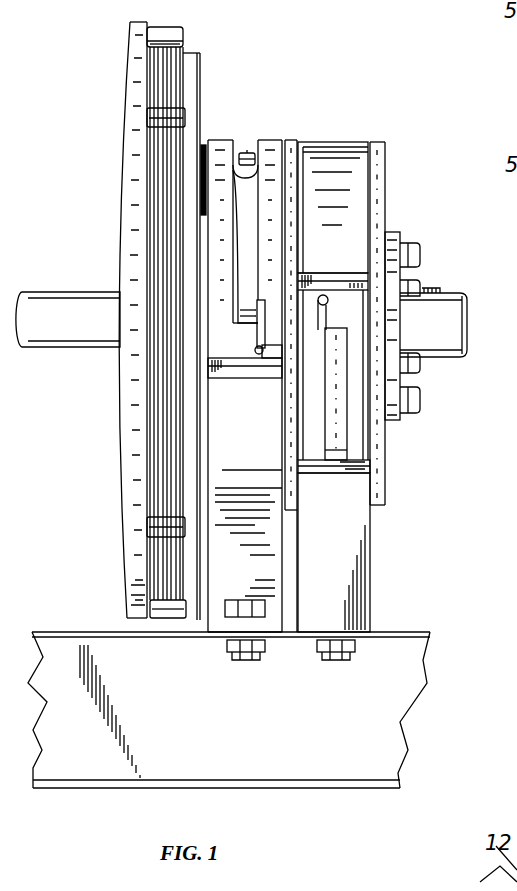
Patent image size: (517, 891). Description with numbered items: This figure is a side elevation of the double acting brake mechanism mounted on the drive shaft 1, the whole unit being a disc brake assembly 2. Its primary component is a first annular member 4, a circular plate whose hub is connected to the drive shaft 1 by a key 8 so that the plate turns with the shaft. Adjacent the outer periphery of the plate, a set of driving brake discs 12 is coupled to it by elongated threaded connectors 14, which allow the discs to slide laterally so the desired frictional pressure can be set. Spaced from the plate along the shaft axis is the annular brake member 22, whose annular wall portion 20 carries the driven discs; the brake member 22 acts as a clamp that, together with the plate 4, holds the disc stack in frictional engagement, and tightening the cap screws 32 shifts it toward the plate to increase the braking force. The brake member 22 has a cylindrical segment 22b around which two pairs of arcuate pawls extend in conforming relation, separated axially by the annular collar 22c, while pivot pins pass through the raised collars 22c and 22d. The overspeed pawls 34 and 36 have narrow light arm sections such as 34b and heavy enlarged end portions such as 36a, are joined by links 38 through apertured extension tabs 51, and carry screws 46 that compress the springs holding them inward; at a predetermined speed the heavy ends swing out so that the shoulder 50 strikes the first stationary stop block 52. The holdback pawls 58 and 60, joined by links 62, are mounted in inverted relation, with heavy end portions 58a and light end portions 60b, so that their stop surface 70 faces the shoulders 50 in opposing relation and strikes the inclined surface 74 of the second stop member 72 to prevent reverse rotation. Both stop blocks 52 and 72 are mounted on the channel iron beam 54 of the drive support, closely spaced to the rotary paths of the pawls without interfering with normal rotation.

The drive shaft 1 is at (44, 300).
The disc brake assembly 2 is at (80, 104).
The first annular member 4 is at (137, 437).
The key 8 is at (428, 293).
The driving brake discs 12 is at (173, 610).
The elongated connectors 14 is at (170, 30).
The annular wall portion 20 is at (200, 62).
The annular brake member 22 is at (393, 150).
The cylindrical segment 22b is at (213, 262).
The annular collar 22c is at (293, 140).
The annular collar 22d is at (378, 140).
The cap screws 32 is at (410, 252).
The overspeed pawl 34 is at (272, 138).
The narrow arm section 34b is at (237, 217).
The overspeed pawl 36 is at (256, 520).
The end portion 36a is at (222, 447).
The links 38 is at (257, 347).
The screws 46 is at (245, 158).
The shoulder 50 is at (243, 378).
The extension tab 51 is at (273, 358).
The stop block 52 is at (223, 597).
The channel iron beam 54 is at (390, 737).
The holdback pawl 58 is at (362, 190).
The heavy end portion 58a is at (336, 152).
The holdback pawl 60 is at (354, 428).
The lightweight end portion 60b is at (345, 445).
The links 62 is at (335, 300).
The stop surface 70 is at (313, 277).
The stop member 72 is at (372, 608).
The inclined surface 74 is at (305, 462).